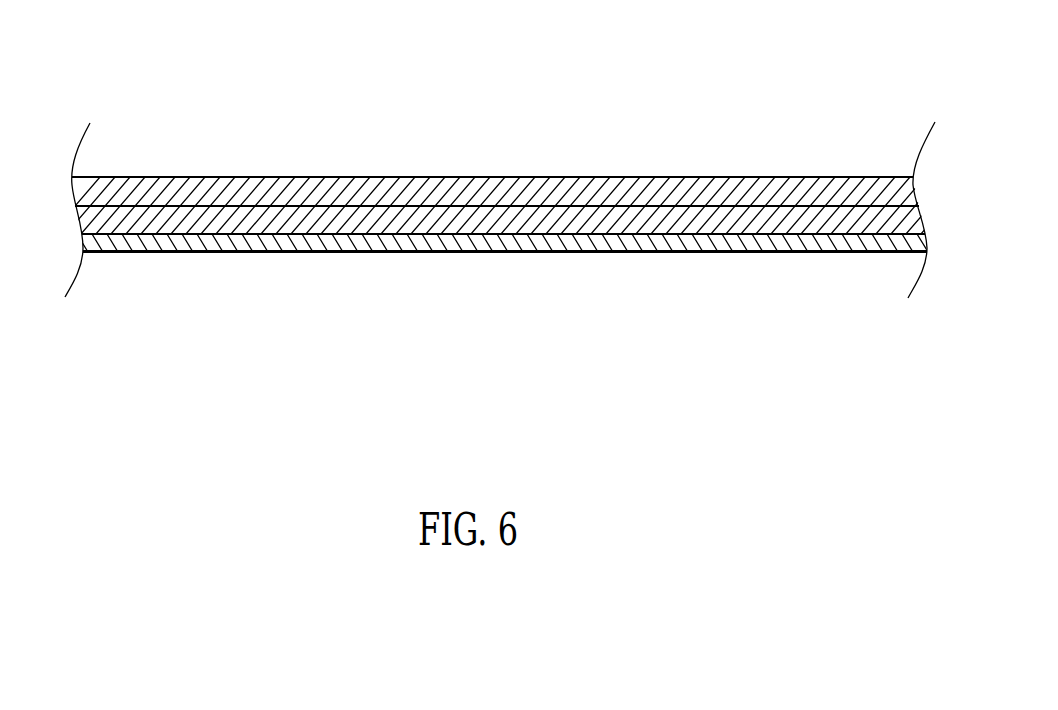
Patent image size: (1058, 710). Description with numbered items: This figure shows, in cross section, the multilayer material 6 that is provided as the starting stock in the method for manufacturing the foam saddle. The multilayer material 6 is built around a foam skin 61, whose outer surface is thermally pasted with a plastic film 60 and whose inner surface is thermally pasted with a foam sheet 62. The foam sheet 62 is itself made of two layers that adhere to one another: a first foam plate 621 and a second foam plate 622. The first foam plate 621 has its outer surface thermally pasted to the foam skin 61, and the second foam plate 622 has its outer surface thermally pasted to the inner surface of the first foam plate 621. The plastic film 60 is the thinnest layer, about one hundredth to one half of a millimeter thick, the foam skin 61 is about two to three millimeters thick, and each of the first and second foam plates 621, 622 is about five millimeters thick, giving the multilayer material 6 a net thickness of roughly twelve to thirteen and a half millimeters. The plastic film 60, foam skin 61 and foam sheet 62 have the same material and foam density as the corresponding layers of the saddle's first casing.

The multilayer material 6 is at (510, 189).
The plastic film 60 is at (815, 252).
The foam skin 61 is at (715, 245).
The foam sheet 62 is at (510, 138).
The first foam plate 621 is at (560, 110).
The second foam plate 622 is at (548, 193).